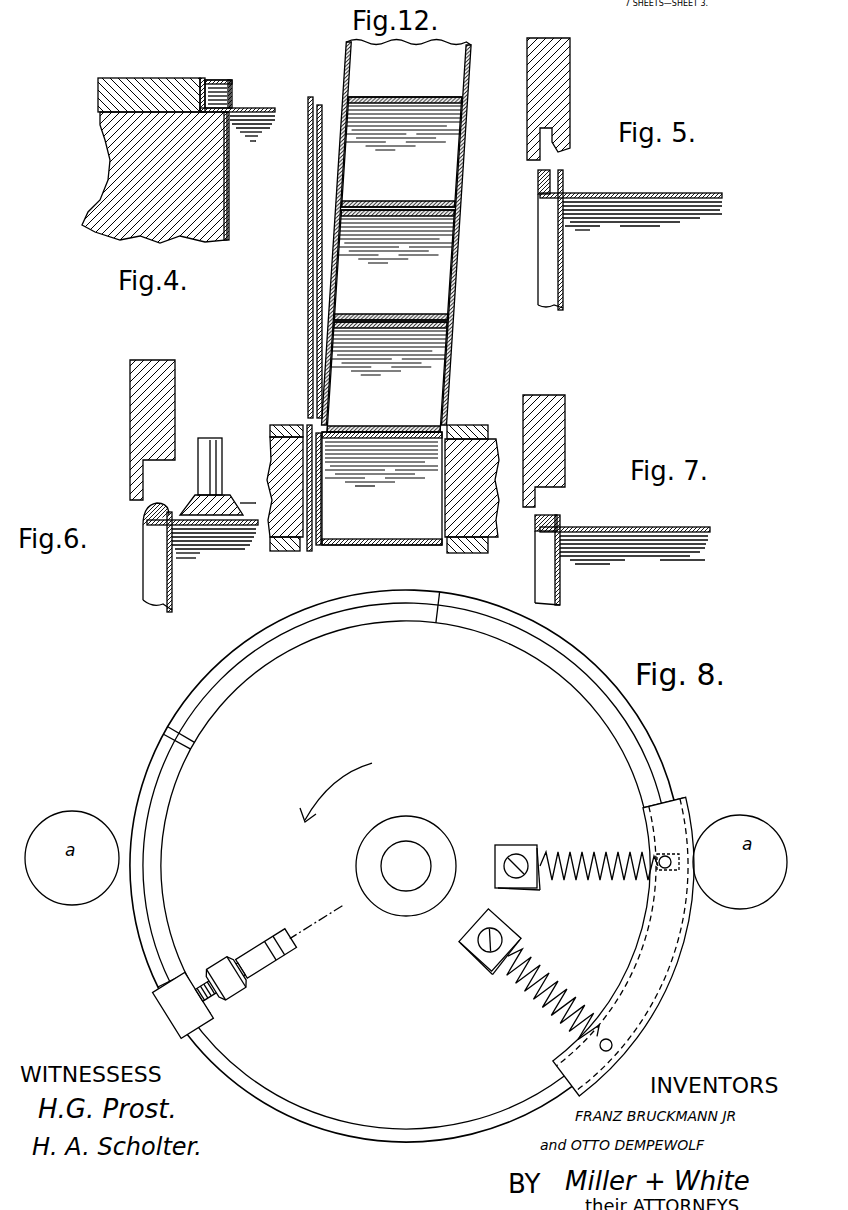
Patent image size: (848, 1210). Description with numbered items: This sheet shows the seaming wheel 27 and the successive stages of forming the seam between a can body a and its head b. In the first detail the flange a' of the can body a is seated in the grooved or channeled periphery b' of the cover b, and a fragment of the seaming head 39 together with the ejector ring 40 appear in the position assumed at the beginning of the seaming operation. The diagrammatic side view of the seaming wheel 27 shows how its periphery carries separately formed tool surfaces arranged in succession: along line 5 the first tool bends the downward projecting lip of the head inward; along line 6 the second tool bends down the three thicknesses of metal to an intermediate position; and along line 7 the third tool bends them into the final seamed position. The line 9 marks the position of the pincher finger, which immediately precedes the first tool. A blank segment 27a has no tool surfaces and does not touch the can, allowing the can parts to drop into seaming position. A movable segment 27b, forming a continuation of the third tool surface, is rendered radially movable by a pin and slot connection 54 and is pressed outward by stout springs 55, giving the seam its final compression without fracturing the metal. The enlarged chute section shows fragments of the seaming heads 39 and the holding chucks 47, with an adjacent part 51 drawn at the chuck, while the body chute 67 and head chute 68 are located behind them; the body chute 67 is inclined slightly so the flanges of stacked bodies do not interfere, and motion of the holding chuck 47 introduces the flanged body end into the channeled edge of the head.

In FIG. 4, the ejector ring 40 is at (98, 99).
In FIG. 12, the ejector ring 40 is at (290, 552).
In FIG. 4, the seaming head 39 is at (108, 152).
In FIG. 12, the seaming head 39 is at (290, 502).
In FIG. 4, the grooved or channeled periphery b' is at (224, 83).
In FIG. 4, the flange a' is at (237, 110).
In FIG. 12, the can body a is at (382, 353).
In FIG. 5, the can body a is at (631, 224).
In FIG. 7, the can body a is at (625, 558).
In FIG. 6, the can body a is at (202, 555).
In FIG. 4, the head b is at (245, 179).
In FIG. 12, the head b is at (325, 488).
In FIG. 5, the head b is at (550, 240).
In FIG. 7, the head b is at (547, 560).
In FIG. 6, the head b is at (157, 557).
In FIG. 12, the body chute 67 is at (396, 236).
In FIG. 12, the head chute 68 is at (315, 290).
In FIG. 12, the cap 51 is at (462, 428).
In FIG. 12, the holding chuck 47 is at (494, 545).
In FIG. 5, the seaming wheel 27 is at (562, 76).
In FIG. 7, the seaming wheel 27 is at (565, 430).
In FIG. 6, the seaming wheel 27 is at (160, 408).
In FIG. 8, the seaming wheel 27 is at (402, 866).
In FIG. 8, the line 5— 5 is at (200, 906).
In FIG. 8, the line 6— 6 is at (310, 672).
In FIG. 8, the line 7— 7 is at (528, 702).
In FIG. 8, the line 9— 9 is at (247, 971).
In FIG. 8, the blank segment 27a is at (340, 1140).
In FIG. 8, the movable segment 27b is at (648, 993).
In FIG. 8, the pin and slot connection 54 is at (672, 856).
In FIG. 8, the springs 55 is at (603, 848).